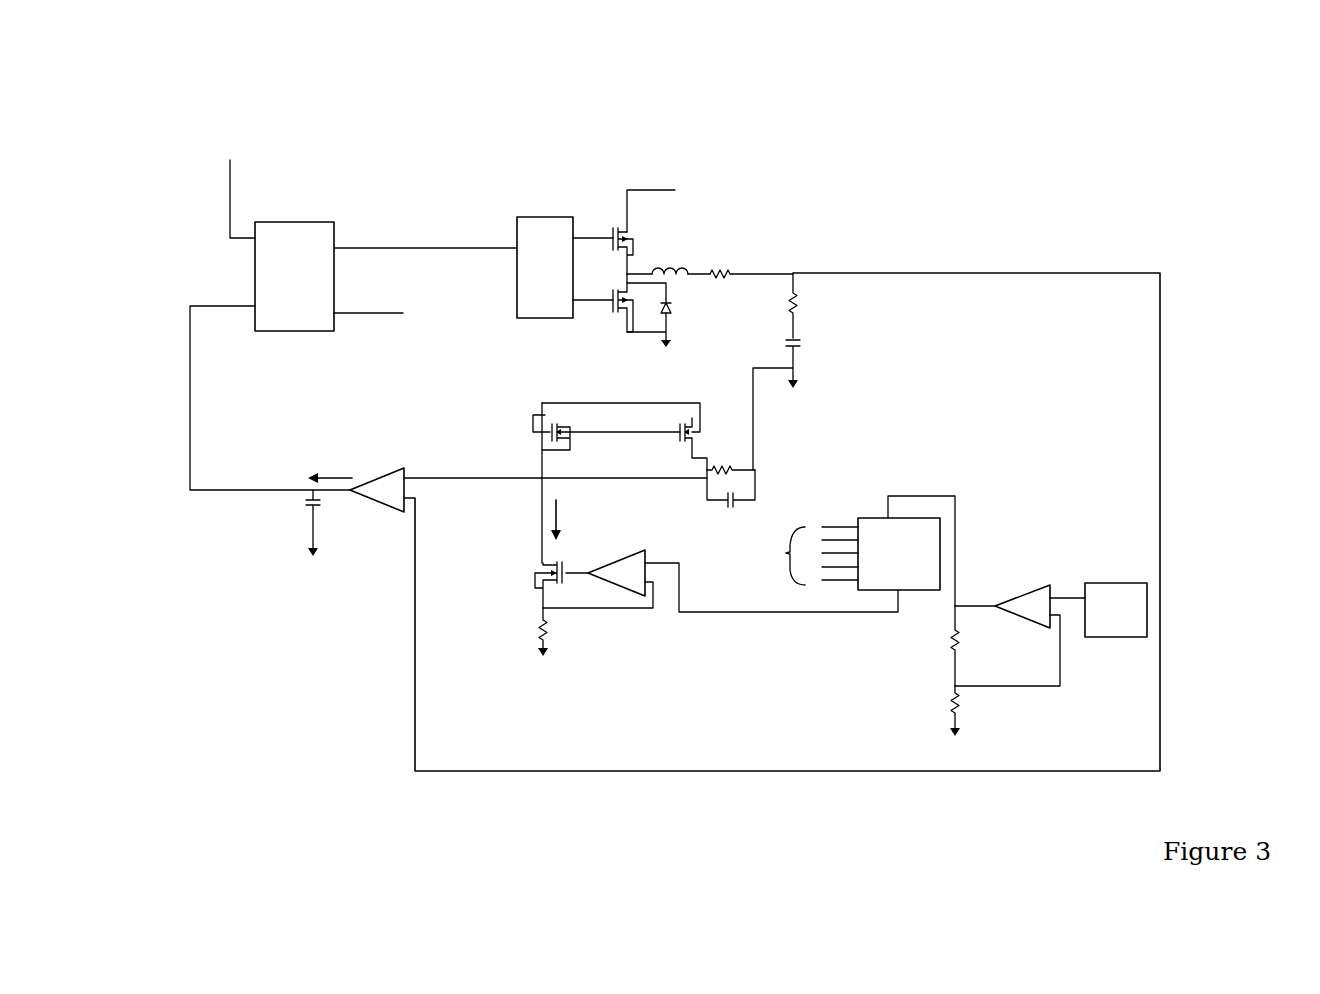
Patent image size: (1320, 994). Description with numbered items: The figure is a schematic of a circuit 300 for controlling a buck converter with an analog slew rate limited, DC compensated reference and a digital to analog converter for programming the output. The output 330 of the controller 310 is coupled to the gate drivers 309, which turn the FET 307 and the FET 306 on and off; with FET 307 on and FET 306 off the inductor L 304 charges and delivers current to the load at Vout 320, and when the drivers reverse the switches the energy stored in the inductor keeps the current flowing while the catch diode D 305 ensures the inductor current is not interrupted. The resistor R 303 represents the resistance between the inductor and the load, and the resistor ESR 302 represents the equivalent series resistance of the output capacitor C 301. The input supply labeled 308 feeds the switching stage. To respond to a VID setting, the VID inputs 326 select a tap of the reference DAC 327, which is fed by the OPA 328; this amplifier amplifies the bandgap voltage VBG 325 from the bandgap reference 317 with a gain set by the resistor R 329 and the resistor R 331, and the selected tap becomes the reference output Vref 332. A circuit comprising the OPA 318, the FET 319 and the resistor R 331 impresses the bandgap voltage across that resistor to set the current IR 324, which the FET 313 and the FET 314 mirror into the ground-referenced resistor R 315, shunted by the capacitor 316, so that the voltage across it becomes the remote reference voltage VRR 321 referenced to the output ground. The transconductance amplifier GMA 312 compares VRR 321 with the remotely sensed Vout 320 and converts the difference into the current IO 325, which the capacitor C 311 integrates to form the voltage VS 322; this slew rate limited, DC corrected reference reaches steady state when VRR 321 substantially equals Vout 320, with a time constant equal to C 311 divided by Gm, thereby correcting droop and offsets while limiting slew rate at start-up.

The circuit 300 is at (690, 92).
The capacitor C 301 is at (794, 402).
The resistor ESR 302 is at (797, 299).
The resistor R 303 is at (717, 255).
The inductor L 304 is at (679, 266).
The catch diode D 305 is at (668, 315).
The FET 306 is at (630, 303).
The FET 307 is at (631, 244).
The input voltage VIN 308 is at (700, 160).
The gate drivers 309 is at (551, 214).
The controller 310 is at (312, 219).
The capacitor C 311 is at (289, 523).
The transconductance amplifier (GMA) 312 is at (382, 509).
The FET 313 is at (535, 438).
The FET 314 is at (698, 430).
The resistor R 315 is at (718, 472).
The capacitor 316 is at (720, 511).
The bandgap reference 317 is at (1125, 582).
The OPA 318 is at (606, 565).
The FET 319 is at (530, 569).
The Vout 320 is at (856, 271).
The remote reference voltage (VRR) 321 is at (476, 483).
The voltage VS 322 is at (191, 384).
The current IR 324 is at (563, 520).
The current I (IO) / VBG 325 is at (352, 467).
The VID inputs 326 is at (818, 520).
The reference DAC 327 is at (893, 574).
The OPA 328 is at (1000, 604).
The resistor R 329 is at (958, 644).
The output 330 is at (412, 240).
The resistor R 331 is at (548, 626).
The reference output voltage Vref 332 is at (800, 613).